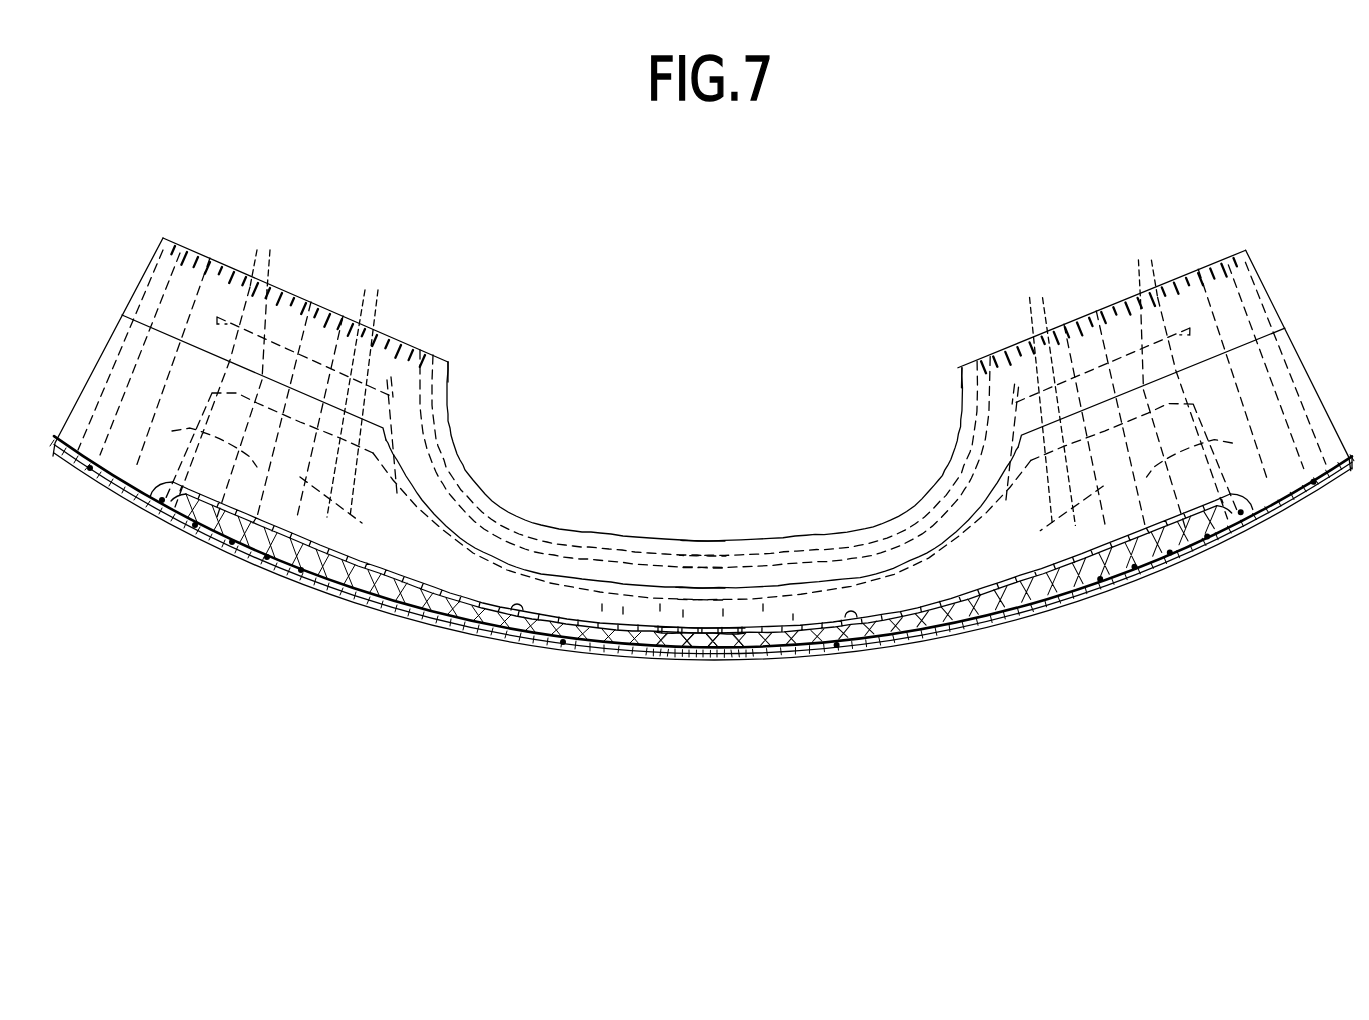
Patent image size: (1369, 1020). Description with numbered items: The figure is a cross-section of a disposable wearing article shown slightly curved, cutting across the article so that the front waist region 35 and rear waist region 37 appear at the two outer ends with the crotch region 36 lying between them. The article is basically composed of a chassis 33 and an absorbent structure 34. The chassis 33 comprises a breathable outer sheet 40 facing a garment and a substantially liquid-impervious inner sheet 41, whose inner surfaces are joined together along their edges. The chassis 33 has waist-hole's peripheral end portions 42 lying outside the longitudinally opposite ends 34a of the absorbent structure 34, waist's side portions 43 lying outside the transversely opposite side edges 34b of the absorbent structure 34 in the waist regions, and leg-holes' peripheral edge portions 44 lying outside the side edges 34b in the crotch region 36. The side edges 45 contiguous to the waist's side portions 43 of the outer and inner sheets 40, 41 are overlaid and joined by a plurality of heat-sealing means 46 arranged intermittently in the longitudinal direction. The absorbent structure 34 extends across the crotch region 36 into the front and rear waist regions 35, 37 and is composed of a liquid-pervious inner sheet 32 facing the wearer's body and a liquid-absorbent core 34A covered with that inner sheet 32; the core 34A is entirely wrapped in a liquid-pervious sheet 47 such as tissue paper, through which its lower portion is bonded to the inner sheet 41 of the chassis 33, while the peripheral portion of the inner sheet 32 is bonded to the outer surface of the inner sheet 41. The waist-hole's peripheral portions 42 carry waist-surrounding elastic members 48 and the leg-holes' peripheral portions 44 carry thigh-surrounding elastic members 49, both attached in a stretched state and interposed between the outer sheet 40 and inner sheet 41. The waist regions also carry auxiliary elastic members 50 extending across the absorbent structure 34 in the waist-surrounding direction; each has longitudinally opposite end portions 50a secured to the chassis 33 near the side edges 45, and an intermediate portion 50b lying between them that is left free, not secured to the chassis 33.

The liquid-pervious inner sheet 32 is at (860, 610).
The chassis 33 is at (1252, 262).
The absorbent structure 34 is at (509, 614).
The longitudinally opposite ends of absorbent structure 34a is at (153, 503).
The liquid-absorbent core 34A is at (798, 640).
The transversely opposite side edges of absorbent structure 34b is at (602, 577).
The front waist region 35 is at (187, 180).
The crotch region 36 is at (487, 300).
The rear waist region 37 is at (1081, 233).
The outer sheet 40 is at (631, 660).
The inner sheet 41 is at (569, 648).
The waist-hole's peripheral end portions 42 is at (137, 410).
The waist's side portions 43 is at (297, 367).
The leg-holes' peripheral edge portions 44 is at (676, 577).
The side edges 45 is at (400, 338).
The heat-sealing means 46 is at (445, 373).
The liquid-pervious sheet 47 is at (728, 632).
The waist-surrounding elastic members 48 is at (82, 463).
The thigh-surrounding elastic members 49 is at (778, 550).
The auxiliary elastic members 50 is at (704, 402).
The longitudinally opposite end portions of auxiliary elastic members 50a is at (702, 373).
The intermediate portion of auxiliary elastic member 50b is at (227, 547).